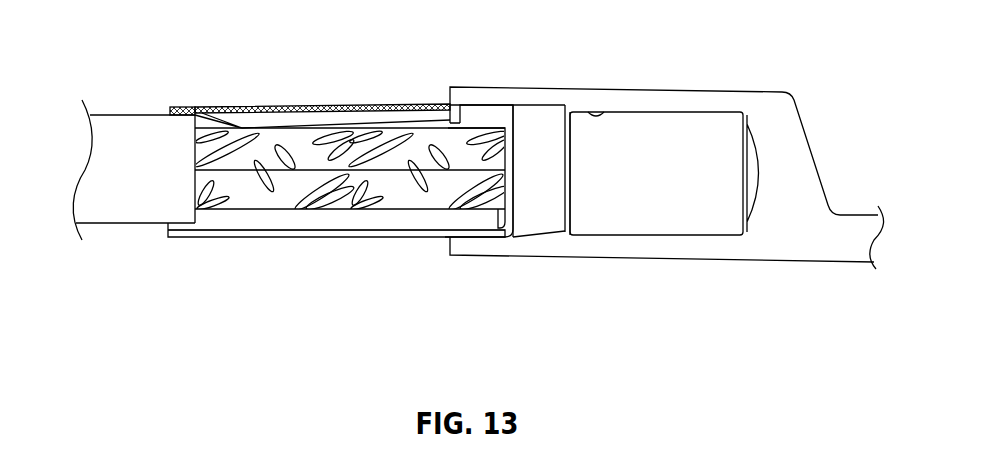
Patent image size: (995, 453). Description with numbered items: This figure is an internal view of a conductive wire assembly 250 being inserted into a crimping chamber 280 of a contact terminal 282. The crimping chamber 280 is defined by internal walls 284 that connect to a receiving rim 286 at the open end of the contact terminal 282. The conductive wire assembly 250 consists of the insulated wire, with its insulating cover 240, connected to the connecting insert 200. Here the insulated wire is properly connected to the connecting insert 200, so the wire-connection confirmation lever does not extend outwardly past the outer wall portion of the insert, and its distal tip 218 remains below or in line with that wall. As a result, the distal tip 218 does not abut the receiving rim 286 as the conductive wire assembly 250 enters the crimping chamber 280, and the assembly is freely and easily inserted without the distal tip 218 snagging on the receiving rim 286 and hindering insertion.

The conductive wire assembly 250 is at (113, 70).
The connecting insert 200 is at (177, 107).
The insulating cover 240 is at (105, 224).
The distal tip 218 is at (447, 105).
The receiving rim 286 is at (449, 100).
The crimping chamber 280 is at (563, 150).
The internal walls 284 is at (598, 113).
The contact terminal 282 is at (655, 88).